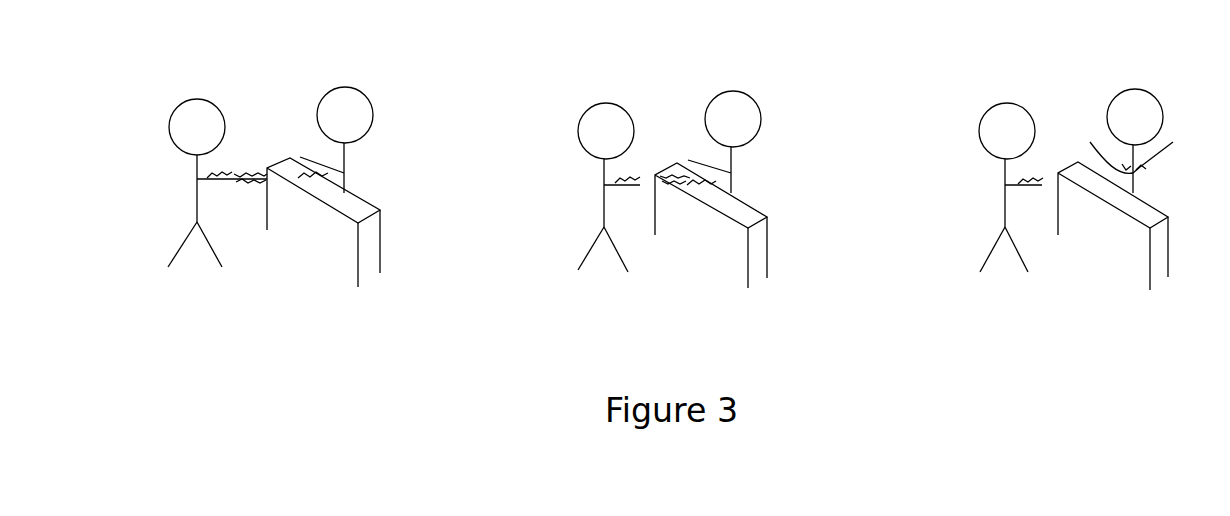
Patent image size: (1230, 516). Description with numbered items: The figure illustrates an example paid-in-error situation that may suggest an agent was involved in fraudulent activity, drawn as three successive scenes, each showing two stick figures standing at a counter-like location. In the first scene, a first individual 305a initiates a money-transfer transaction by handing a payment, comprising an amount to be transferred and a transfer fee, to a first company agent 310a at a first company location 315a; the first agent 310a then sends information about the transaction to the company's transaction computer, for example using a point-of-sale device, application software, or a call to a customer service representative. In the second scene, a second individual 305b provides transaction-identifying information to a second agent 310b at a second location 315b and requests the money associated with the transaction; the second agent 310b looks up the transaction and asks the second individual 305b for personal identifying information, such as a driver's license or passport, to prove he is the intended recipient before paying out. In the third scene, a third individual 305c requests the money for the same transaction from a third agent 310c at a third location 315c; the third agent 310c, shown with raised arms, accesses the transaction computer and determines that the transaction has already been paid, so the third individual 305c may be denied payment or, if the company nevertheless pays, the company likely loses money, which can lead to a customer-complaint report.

The first individual 305a is at (187, 90).
The first company agent 310a is at (373, 83).
The first company location 315a is at (312, 258).
The second individual 305b is at (590, 98).
The second agent 310b is at (760, 87).
The second location 315b is at (698, 258).
The third individual 305c is at (988, 95).
The third agent 310c is at (1160, 83).
The third location 315c is at (1097, 258).